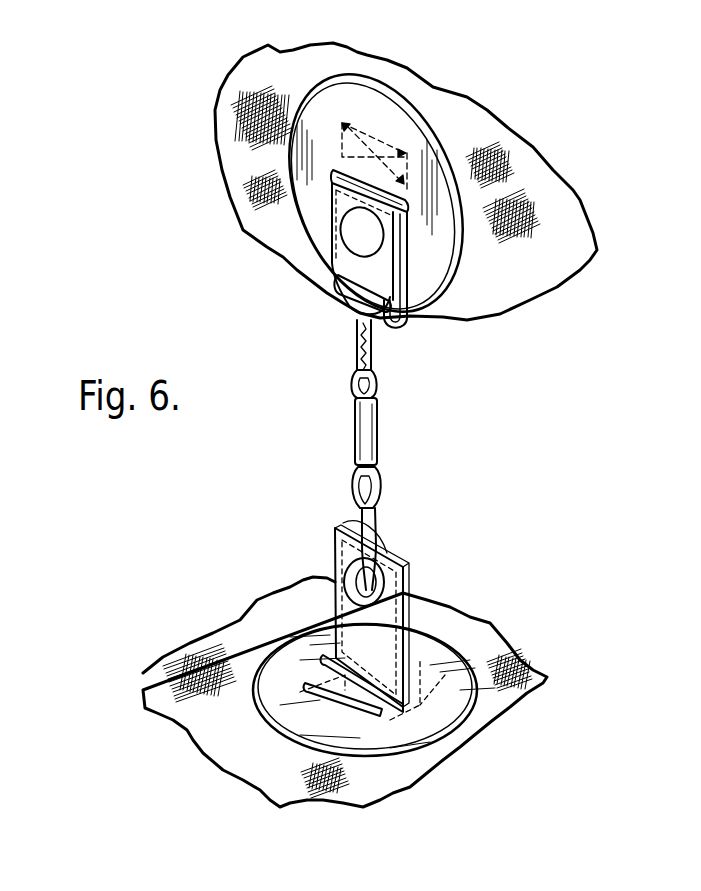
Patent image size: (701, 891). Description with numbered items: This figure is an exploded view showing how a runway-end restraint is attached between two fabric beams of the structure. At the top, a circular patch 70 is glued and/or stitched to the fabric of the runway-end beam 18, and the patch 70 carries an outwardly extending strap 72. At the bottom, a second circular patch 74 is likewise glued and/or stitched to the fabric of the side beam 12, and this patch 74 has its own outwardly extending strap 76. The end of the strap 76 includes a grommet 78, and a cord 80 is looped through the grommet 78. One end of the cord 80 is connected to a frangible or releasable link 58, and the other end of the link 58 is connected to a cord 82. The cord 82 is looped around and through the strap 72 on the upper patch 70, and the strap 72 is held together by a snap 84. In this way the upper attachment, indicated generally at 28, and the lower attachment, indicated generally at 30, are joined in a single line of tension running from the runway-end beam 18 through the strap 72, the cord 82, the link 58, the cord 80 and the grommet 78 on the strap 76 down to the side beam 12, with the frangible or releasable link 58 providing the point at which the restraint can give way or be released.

The side beam 12 is at (231, 723).
The runway-end beam 18 is at (547, 257).
The upper fastening assembly 28 is at (309, 238).
The lower fastening assembly 30 is at (453, 633).
The frangible or releasable link 58 is at (379, 437).
The circular patch 70 is at (354, 108).
The strap 72 is at (393, 332).
The circular patch 74 is at (290, 696).
The strap 76 is at (405, 566).
The grommet 78 is at (350, 577).
The cord 80 is at (378, 517).
The cord 82 is at (357, 337).
The snap 84 is at (347, 240).